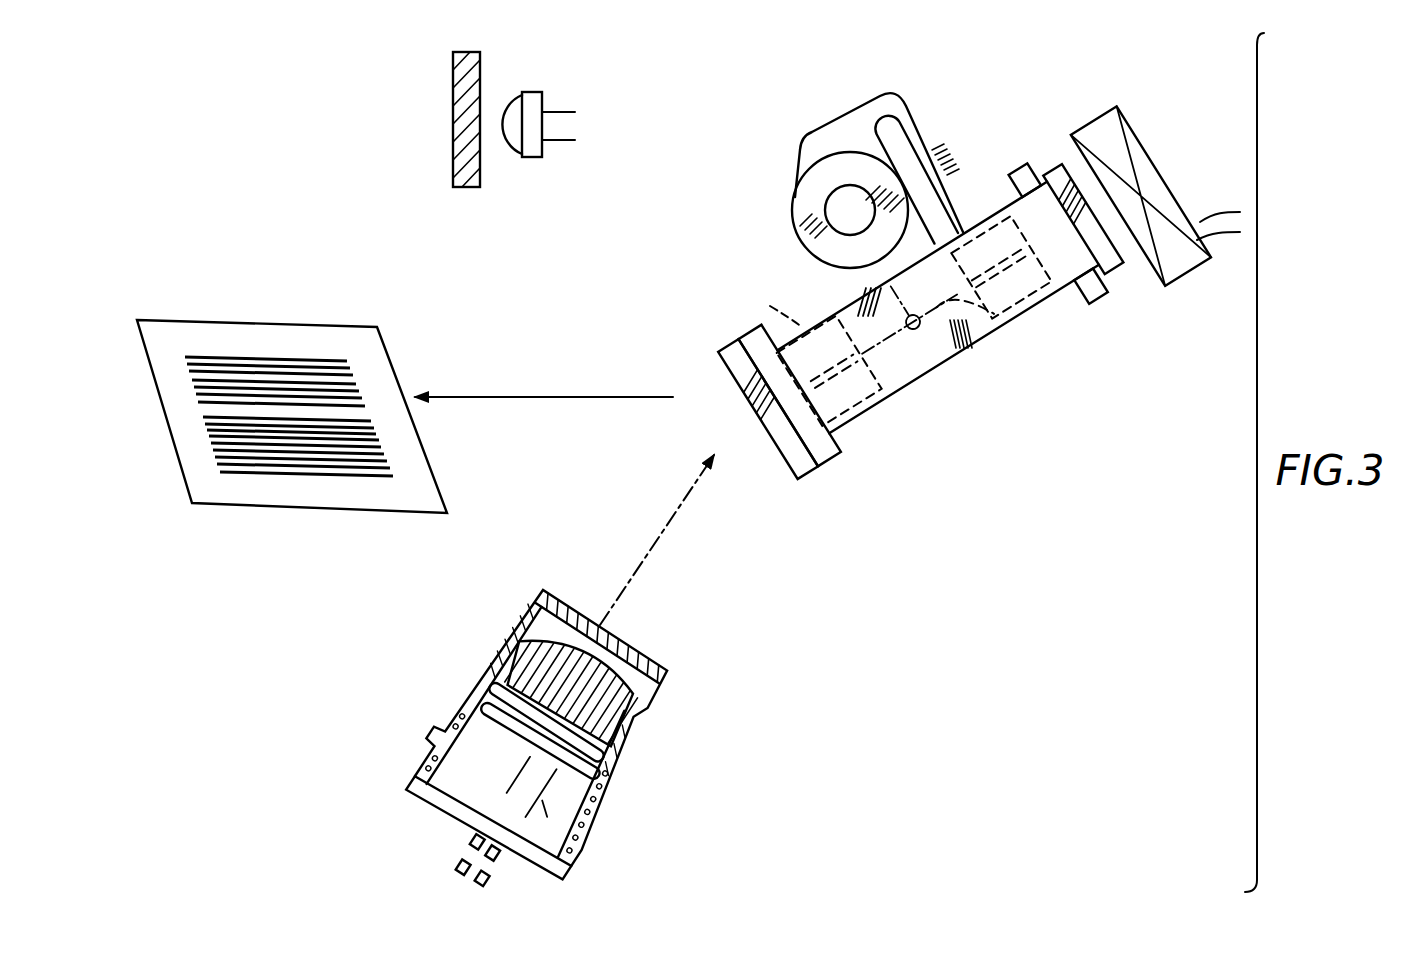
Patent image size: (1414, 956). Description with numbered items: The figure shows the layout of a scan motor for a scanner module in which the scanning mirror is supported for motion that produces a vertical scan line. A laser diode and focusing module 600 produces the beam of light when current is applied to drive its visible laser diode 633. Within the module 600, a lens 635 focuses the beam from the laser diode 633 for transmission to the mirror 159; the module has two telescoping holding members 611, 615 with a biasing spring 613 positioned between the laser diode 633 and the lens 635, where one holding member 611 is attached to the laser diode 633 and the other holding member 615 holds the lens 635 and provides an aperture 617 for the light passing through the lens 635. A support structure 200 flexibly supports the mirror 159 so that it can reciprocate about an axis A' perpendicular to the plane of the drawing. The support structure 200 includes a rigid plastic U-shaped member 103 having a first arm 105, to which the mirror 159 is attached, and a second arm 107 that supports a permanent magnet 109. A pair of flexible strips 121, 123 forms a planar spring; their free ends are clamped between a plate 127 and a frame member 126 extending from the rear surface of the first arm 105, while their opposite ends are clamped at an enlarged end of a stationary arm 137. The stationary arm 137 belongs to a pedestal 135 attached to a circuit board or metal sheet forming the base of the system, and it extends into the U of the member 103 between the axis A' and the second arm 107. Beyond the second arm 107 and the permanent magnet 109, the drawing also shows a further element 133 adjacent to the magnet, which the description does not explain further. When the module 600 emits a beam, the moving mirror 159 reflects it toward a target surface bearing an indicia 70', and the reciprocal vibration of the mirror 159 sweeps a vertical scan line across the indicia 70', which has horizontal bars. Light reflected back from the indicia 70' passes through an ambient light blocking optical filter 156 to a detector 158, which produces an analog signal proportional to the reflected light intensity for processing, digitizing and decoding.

The indicia 70' is at (331, 416).
The U-shaped member 103 is at (855, 286).
The first arm 105 is at (772, 327).
The second arm 107 is at (1012, 192).
The permanent magnet 109 is at (1107, 280).
The flexible strip 121 is at (1007, 327).
The flexible strip 123 is at (1040, 320).
The frame member 126 is at (779, 310).
The plate 127 is at (857, 407).
The optical filter 133 is at (1153, 158).
The pedestal 135 is at (797, 197).
The stationary arm 137 is at (940, 128).
The ambient light blocking optical filter 156 is at (450, 107).
The detector 158 is at (531, 158).
The mirror 159 is at (780, 470).
The support structure 200 is at (741, 249).
The laser diode and focusing module 600 is at (418, 735).
The holding member 611 is at (480, 693).
The biasing spring 613 is at (500, 687).
The holding member 615 is at (523, 623).
The aperture 617 is at (600, 623).
The visible laser diode 633 is at (583, 823).
The lens 635 is at (657, 680).
The axis A' is at (910, 326).